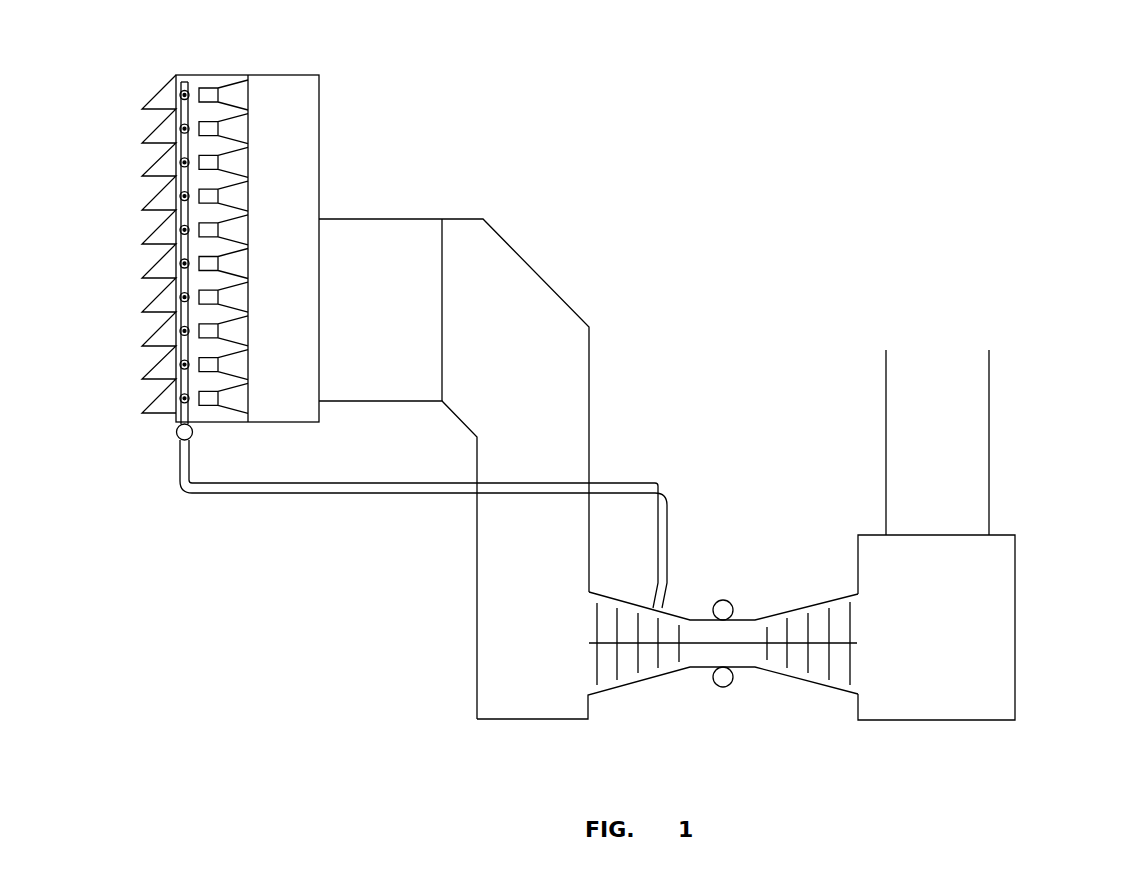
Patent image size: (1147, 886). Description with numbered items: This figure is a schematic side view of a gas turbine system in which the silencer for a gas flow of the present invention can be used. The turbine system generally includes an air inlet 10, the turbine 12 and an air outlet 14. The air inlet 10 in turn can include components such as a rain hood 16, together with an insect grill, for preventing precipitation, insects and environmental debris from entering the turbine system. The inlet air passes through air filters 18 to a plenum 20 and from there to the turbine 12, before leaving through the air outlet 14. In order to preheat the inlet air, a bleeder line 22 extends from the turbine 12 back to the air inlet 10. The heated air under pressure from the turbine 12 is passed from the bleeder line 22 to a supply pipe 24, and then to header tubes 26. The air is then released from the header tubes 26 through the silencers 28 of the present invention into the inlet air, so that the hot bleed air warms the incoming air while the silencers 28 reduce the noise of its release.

The air inlet 10 is at (333, 127).
The turbine 12 is at (757, 600).
The air outlet 14 is at (1003, 508).
The rain hood 16 is at (157, 93).
The air filters 18 is at (232, 83).
The plenum 20 is at (287, 73).
The bleeder line 22 is at (393, 494).
The supply pipe 24 is at (176, 433).
The header tubes 26 is at (182, 283).
The silencers 28 is at (180, 231).